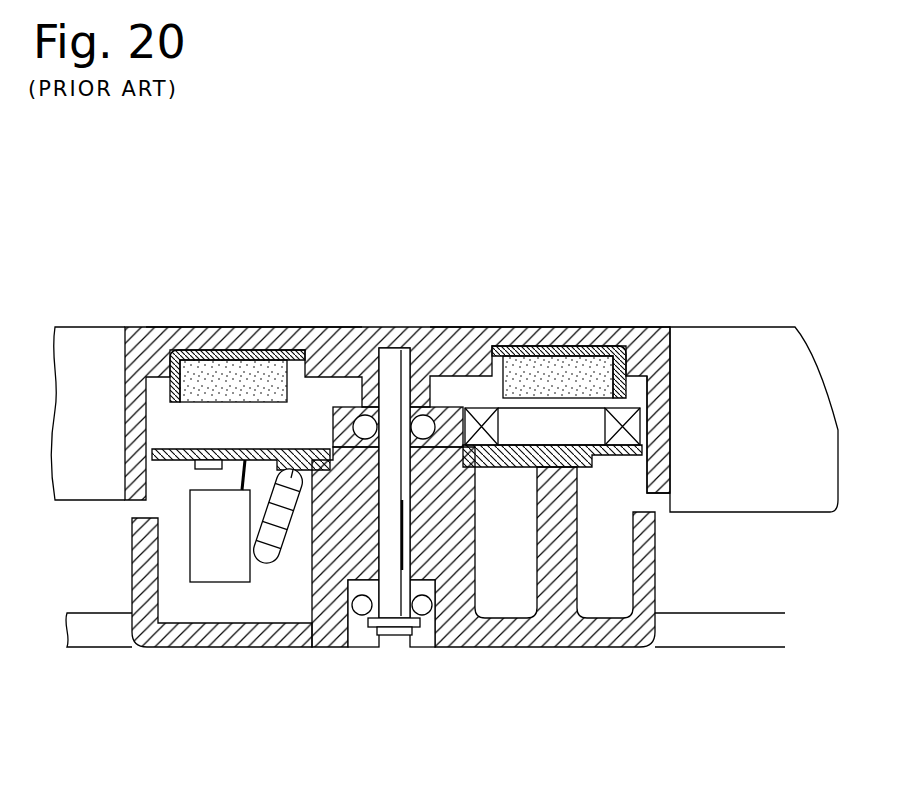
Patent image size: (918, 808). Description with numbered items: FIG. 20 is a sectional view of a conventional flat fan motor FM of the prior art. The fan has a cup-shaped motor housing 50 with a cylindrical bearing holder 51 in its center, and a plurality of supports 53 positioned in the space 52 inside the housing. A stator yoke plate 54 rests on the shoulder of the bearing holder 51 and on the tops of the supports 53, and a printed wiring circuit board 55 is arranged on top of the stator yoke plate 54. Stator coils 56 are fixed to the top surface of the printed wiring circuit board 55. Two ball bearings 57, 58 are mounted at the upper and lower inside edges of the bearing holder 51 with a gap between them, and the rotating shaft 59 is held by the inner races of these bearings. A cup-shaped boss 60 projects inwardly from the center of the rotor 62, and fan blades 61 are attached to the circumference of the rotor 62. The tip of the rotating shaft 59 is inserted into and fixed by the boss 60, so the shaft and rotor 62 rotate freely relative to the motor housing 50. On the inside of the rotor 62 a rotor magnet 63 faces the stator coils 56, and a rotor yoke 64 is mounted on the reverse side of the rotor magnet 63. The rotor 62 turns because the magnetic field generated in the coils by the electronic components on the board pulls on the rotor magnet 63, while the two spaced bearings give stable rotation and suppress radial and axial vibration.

The flat motor FM is at (262, 305).
The motor housing 50 is at (558, 628).
The bearing holder 51 is at (320, 555).
The space 52 is at (492, 598).
The supports 53 is at (537, 586).
The stator yoke plate 54 is at (293, 468).
The printed wiring circuit board 55 is at (650, 400).
The stator coils 56 is at (632, 396).
The ball bearing 57 is at (342, 357).
The ball bearing 58 is at (356, 618).
The rotating shaft 59 is at (395, 357).
The boss 60 is at (432, 400).
The fan blades 61 is at (772, 347).
The rotor 62 is at (557, 326).
The rotor magnet 63 is at (600, 372).
The rotor yoke 64 is at (203, 350).